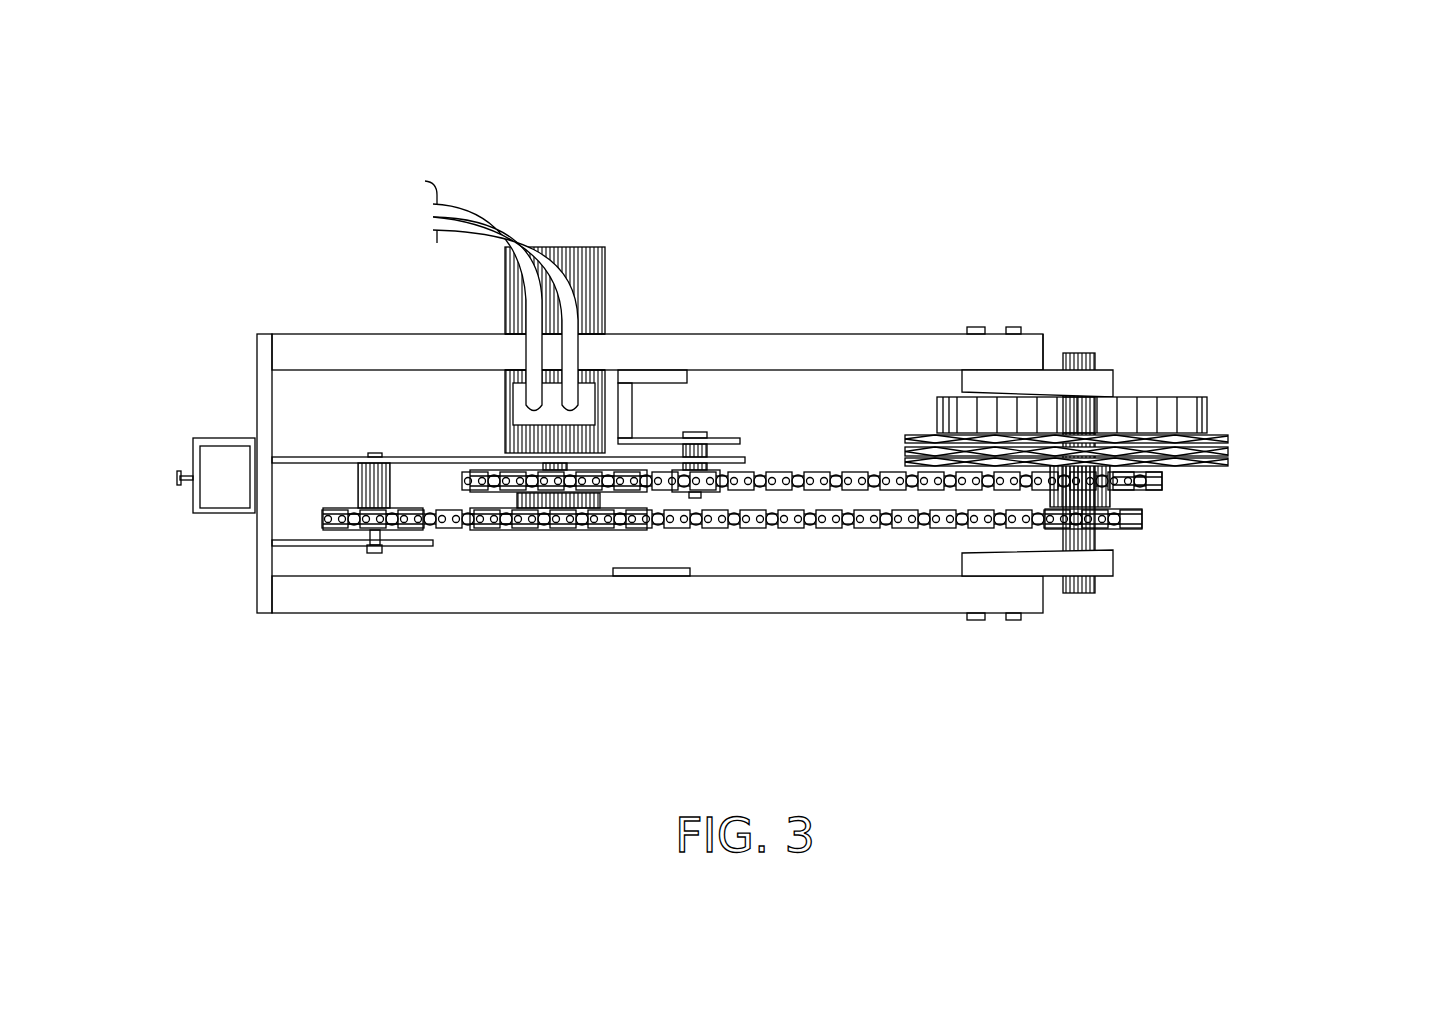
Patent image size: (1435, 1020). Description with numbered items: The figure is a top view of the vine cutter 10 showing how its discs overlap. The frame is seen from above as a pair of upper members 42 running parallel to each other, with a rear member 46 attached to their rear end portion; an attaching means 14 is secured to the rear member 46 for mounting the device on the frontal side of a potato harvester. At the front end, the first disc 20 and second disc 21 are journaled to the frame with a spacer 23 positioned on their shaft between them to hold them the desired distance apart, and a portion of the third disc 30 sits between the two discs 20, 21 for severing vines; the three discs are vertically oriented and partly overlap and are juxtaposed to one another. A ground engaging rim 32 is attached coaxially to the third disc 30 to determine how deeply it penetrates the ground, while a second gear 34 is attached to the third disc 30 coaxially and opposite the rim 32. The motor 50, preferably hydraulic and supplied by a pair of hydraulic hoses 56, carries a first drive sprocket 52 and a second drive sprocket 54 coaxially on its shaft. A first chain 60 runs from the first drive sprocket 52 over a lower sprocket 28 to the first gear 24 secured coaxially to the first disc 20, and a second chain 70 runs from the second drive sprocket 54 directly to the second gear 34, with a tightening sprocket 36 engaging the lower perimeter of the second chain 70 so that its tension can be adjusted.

The vine cutter 10 is at (272, 173).
The attaching means 14 is at (222, 514).
The first disc 20 is at (1237, 474).
The second disc 21 is at (1233, 422).
The spacer 23 is at (1090, 442).
The first gear 24 is at (1123, 528).
The lower sprocket 28 is at (355, 528).
The third disc 30 is at (1245, 450).
The ground engaging rim 32 is at (1177, 397).
The second gear 34 is at (1162, 487).
The tightening sprocket 36 is at (695, 492).
The upper members 42 is at (672, 333).
The rear member 46 is at (255, 397).
The motor 50 is at (570, 247).
The first drive sprocket 52 is at (552, 533).
The second drive sprocket 54 is at (482, 488).
The hydraulic hoses 56 is at (493, 227).
The first chain 60 is at (793, 470).
The second chain 70 is at (790, 528).